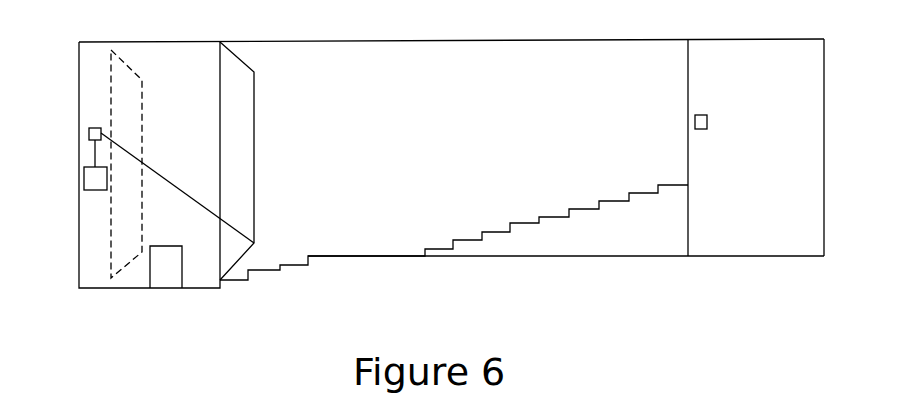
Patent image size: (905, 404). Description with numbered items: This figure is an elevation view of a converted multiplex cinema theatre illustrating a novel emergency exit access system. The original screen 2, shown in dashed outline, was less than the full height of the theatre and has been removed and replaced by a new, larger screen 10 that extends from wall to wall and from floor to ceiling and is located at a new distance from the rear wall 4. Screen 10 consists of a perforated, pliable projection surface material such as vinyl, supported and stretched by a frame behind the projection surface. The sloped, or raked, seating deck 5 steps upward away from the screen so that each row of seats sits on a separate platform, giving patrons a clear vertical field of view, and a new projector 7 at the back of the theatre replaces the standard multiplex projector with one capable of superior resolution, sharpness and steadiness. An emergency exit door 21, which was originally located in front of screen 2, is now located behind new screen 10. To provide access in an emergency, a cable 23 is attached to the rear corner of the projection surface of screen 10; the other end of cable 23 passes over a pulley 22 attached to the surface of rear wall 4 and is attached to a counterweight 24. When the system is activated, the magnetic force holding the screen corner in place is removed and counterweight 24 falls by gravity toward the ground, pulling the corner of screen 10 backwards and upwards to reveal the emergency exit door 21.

The screen 2 is at (127, 62).
The rear wall 4 is at (79, 92).
The seating deck 5 is at (538, 223).
The projector 7 is at (705, 118).
The screen 10 is at (247, 128).
The emergency exit door 21 is at (167, 282).
The pulley 22 is at (89, 131).
The cable 23 is at (157, 173).
The counterweight 24 is at (107, 182).